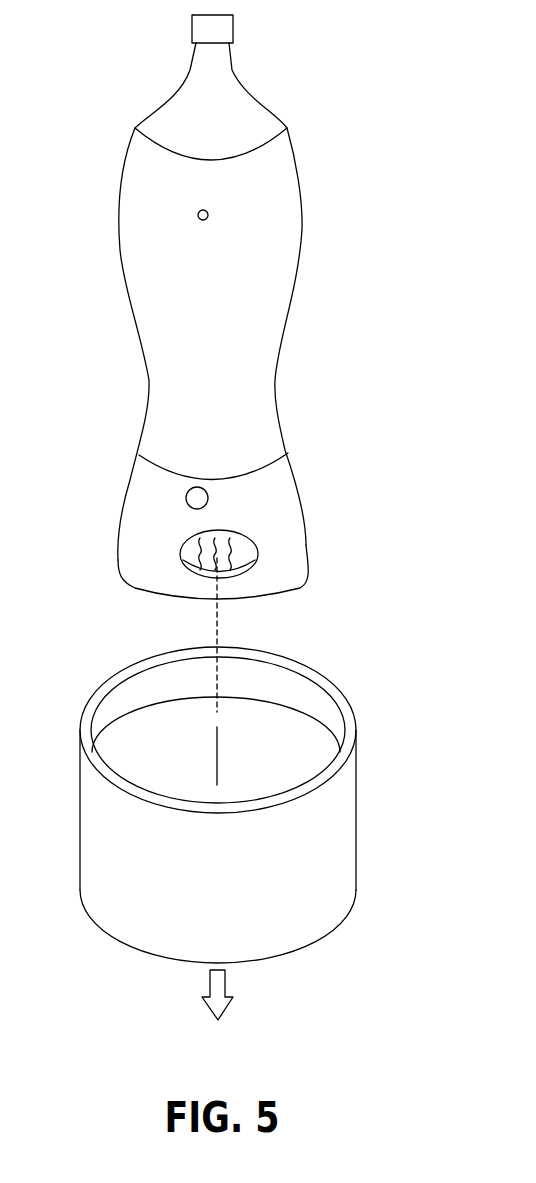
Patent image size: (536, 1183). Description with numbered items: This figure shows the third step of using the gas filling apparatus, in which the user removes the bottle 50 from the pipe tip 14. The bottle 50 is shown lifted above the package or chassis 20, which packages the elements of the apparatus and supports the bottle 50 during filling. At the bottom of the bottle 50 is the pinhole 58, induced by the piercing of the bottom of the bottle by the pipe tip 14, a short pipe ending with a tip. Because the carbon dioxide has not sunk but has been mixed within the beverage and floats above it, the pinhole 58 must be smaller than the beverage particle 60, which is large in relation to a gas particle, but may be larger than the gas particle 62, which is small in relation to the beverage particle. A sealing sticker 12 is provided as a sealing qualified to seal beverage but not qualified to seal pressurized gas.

The bottle 50 is at (300, 171).
The pinhole 58 is at (200, 537).
The gas particle 62 is at (218, 216).
The beverage particle 60 is at (206, 490).
The sealing sticker 12 is at (227, 531).
The pipe tip 14 is at (217, 753).
The package or chassis 20 is at (335, 826).